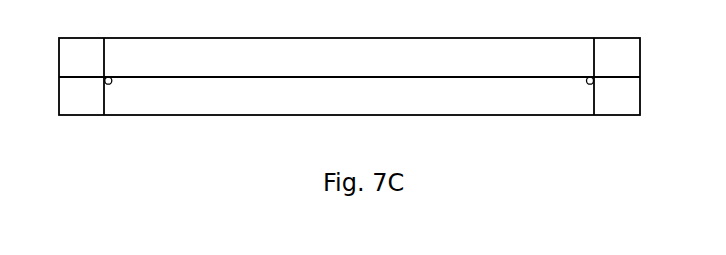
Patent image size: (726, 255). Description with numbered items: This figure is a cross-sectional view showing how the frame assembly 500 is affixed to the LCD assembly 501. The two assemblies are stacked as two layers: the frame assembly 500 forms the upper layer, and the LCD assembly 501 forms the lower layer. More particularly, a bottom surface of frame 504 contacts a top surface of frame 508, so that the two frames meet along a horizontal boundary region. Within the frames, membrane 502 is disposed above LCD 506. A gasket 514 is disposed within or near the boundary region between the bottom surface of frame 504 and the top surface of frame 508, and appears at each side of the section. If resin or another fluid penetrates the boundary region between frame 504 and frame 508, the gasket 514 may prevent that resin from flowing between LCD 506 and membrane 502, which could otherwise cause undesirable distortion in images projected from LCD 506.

The frame assembly 500 is at (218, 36).
The LCD assembly 501 is at (340, 117).
The membrane 502 is at (548, 66).
The LCD 506 is at (548, 102).
The frame 504 is at (623, 58).
The frame 508 is at (623, 102).
The gasket 514 is at (111, 83).